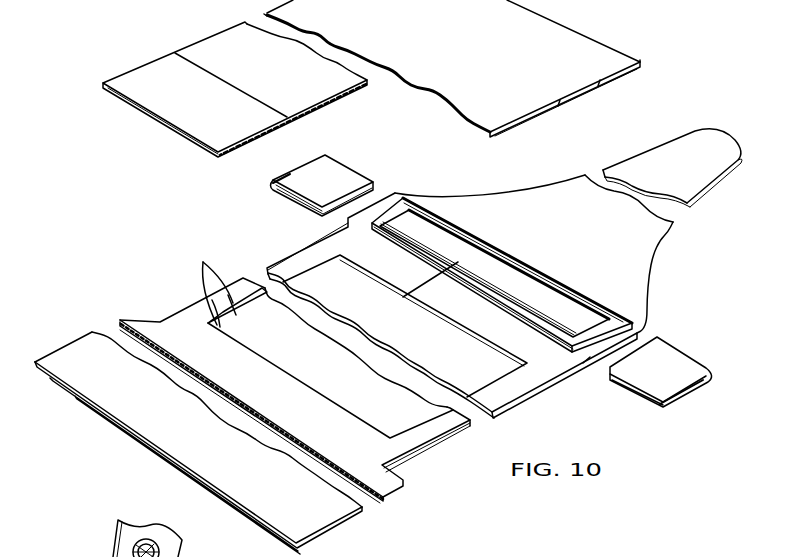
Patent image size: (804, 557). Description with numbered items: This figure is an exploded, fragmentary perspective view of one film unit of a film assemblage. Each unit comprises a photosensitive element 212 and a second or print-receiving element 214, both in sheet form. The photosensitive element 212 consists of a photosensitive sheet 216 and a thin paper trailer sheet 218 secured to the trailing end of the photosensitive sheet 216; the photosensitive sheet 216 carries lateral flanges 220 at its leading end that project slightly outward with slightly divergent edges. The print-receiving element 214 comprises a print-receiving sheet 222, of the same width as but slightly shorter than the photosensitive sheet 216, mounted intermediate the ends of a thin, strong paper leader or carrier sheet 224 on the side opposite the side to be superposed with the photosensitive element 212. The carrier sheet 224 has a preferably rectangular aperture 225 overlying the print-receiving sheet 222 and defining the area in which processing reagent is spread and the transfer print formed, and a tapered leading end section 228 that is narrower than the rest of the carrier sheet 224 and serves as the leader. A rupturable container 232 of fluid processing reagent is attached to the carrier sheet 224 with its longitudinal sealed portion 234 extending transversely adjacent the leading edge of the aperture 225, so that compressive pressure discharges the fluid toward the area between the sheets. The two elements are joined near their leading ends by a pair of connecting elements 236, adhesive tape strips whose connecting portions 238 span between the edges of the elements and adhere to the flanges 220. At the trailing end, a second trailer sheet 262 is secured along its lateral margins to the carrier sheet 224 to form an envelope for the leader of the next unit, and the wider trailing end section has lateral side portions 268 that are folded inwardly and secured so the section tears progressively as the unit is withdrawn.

The photosensitive element 212 is at (466, 123).
The second or print-receiving element 214 is at (288, 254).
The photosensitive sheet 216 is at (540, 106).
The trailer sheet 218 is at (197, 135).
The lateral flanges 220 is at (637, 62).
The second or print-receiving sheet 222 is at (421, 344).
The leader or carrier sheet 224 is at (330, 435).
The aperture 225 is at (208, 285).
The leading end section 228 is at (597, 232).
The rupturable container 232 is at (547, 293).
The longitudinal sealed portion 234 is at (403, 297).
The connecting elements 236 is at (336, 172).
The connecting portions 238 is at (277, 186).
The second trailer sheet 262 is at (230, 392).
The lateral side portions 268 is at (138, 320).